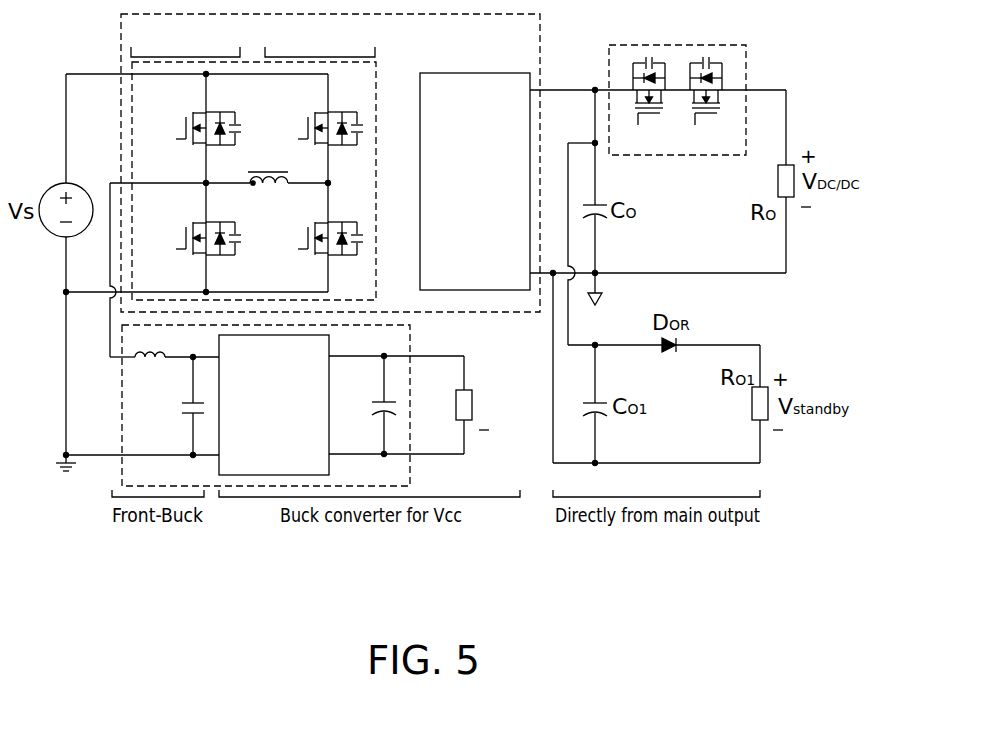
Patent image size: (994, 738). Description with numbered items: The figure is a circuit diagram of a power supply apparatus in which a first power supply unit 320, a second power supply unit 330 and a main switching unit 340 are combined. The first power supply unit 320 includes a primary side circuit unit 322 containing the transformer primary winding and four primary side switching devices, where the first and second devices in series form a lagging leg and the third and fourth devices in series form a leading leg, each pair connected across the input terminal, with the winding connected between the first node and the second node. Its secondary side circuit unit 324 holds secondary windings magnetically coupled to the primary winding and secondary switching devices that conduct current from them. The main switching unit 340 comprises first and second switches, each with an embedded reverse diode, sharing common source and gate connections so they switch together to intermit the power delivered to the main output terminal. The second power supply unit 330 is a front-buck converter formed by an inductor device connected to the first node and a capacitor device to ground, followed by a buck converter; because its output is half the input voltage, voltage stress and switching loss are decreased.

The first power supply unit 320 is at (121, 33).
The primary side circuit unit 322 is at (132, 122).
The secondary side circuit unit 324 is at (452, 73).
The second power supply unit 330 is at (122, 408).
The main switching unit 340 is at (746, 62).